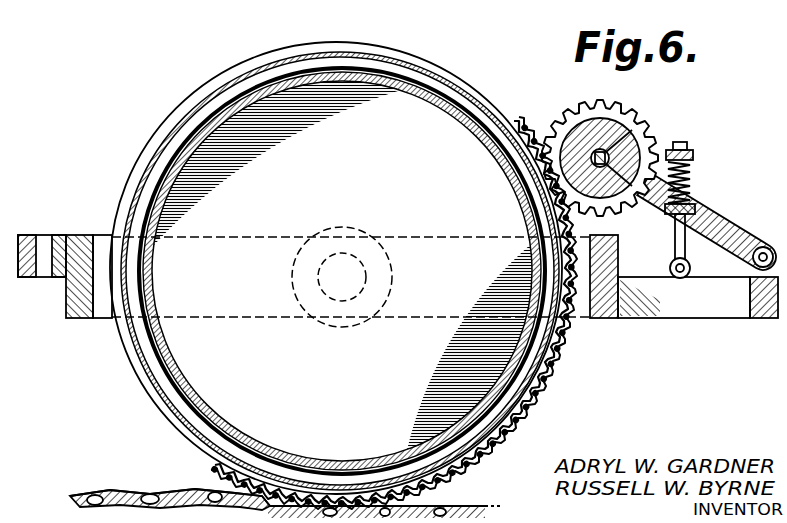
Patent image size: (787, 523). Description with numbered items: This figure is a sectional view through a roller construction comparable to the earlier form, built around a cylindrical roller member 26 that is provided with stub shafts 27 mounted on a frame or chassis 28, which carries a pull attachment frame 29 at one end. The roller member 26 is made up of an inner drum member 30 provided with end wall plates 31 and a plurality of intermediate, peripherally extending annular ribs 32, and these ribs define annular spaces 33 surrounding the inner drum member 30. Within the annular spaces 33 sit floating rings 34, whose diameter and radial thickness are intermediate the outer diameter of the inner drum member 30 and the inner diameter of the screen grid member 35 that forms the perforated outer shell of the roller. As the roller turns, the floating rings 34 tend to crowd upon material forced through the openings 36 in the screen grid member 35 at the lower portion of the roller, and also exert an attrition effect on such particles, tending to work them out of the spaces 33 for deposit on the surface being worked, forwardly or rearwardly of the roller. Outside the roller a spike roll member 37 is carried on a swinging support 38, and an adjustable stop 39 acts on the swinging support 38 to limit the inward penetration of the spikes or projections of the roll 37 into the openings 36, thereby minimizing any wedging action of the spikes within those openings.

The cylindrical roller member 26 is at (128, 390).
The stub shafts 27 is at (364, 272).
The frame or chassis 28 is at (78, 242).
The pull attachment frame 29 is at (24, 238).
The inner drum member 30 is at (472, 127).
The end wall plates 31 is at (340, 270).
The annular ribs 32 is at (423, 94).
The annular spaces 33 is at (462, 108).
The floating rings 34 is at (375, 66).
The screen grid member 35 is at (540, 370).
The openings 36 is at (540, 407).
The spike roll member 37 is at (630, 127).
The swinging support 38 is at (722, 215).
The adjustable stop 39 is at (686, 182).